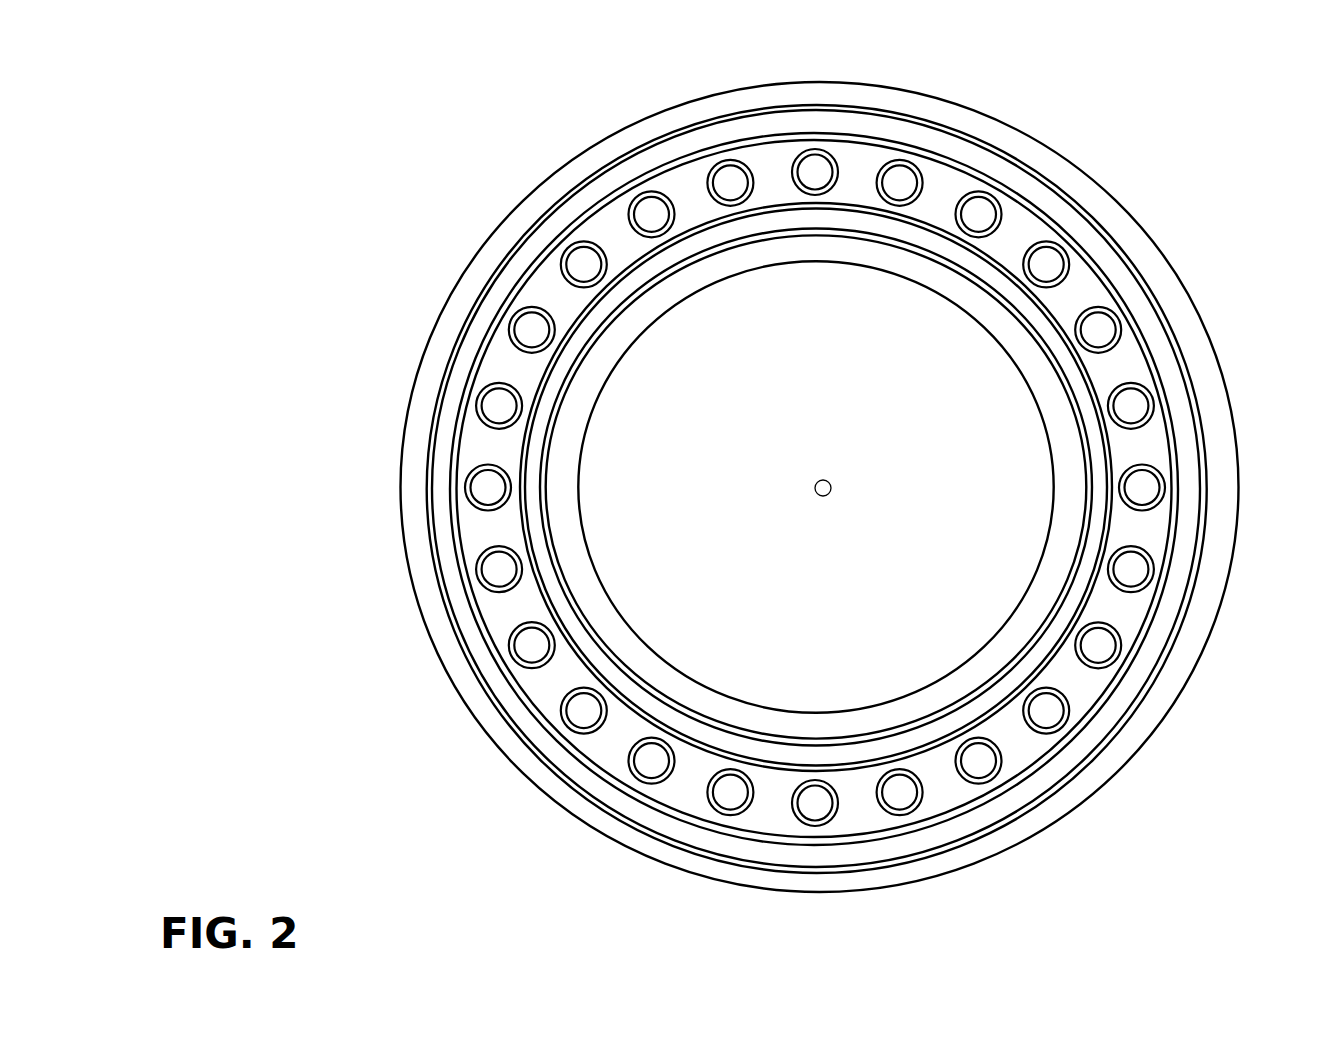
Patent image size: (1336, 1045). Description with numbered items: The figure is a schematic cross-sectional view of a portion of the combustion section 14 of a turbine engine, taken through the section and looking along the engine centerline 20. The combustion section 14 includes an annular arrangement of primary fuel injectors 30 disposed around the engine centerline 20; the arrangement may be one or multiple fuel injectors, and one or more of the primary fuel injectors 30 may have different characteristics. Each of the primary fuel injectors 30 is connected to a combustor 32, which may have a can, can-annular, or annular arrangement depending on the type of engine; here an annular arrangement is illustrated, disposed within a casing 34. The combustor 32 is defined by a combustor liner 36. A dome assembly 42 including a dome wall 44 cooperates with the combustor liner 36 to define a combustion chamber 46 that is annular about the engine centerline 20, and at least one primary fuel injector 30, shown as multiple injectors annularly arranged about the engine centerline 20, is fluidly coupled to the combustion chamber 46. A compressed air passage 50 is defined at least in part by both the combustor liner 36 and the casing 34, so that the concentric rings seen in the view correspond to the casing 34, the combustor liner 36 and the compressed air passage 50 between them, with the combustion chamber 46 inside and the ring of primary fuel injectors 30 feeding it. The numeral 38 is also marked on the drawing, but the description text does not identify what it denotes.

The combustion section 14 is at (1204, 80).
The engine centerline 20 is at (818, 495).
The primary fuel injectors 30 is at (1131, 402).
The combustor 32 is at (984, 120).
The casing 34 is at (1057, 148).
The combustor liner 36 is at (1206, 433).
The inner rim 38 is at (1083, 205).
The dome assembly 42 is at (859, 96).
The dome wall 44 is at (856, 178).
The combustion chamber 46 is at (1129, 349).
The compressed air passage 50 is at (1026, 346).